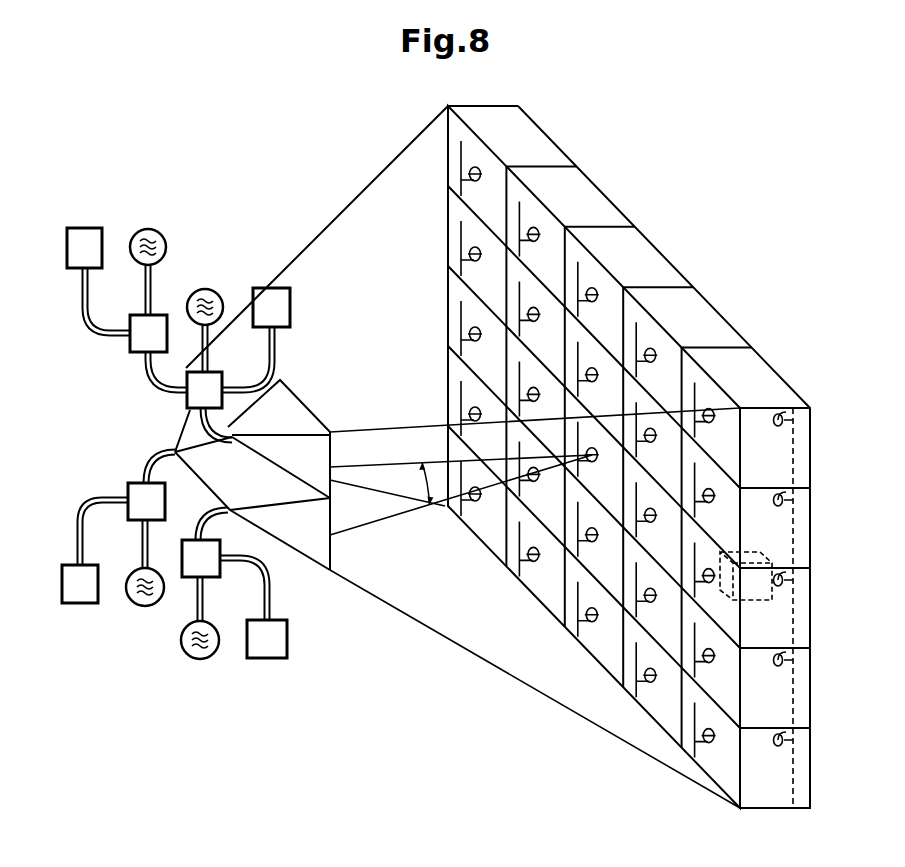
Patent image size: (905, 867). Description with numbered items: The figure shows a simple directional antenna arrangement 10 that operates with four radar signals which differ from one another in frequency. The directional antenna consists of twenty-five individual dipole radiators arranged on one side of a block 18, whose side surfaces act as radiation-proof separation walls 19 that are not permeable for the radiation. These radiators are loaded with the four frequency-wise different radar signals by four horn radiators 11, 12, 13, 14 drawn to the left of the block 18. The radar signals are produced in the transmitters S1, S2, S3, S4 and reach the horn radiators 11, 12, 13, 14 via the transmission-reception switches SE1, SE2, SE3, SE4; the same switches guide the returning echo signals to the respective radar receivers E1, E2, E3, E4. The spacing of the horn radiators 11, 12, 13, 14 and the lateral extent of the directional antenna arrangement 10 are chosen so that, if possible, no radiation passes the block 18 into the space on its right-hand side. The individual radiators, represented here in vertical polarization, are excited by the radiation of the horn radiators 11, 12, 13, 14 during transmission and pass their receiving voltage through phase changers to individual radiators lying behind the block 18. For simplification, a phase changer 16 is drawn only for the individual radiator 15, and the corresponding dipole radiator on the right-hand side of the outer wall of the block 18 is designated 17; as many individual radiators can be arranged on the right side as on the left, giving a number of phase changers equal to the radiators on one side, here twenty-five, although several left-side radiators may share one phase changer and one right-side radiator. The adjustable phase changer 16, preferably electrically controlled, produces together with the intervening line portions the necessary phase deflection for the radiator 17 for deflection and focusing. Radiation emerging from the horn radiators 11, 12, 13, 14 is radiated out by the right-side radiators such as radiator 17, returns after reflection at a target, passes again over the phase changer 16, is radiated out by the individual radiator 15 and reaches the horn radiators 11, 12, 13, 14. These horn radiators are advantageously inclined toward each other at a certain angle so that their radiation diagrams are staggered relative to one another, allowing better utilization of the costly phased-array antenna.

The directional antenna arrangement 10 is at (648, 238).
The horn radiator 11 is at (235, 348).
The horn radiator 12 is at (303, 415).
The horn radiator 13 is at (215, 465).
The horn radiator 14 is at (318, 545).
The individual radiator 15 is at (693, 552).
The phase changer 16 is at (757, 590).
The dipole radiator 17 is at (794, 547).
The block 18 is at (535, 145).
The separation wall 19 is at (508, 190).
The radar receiver E1 is at (98, 280).
The radar receiver E2 is at (256, 339).
The radar receiver E3 is at (95, 551).
The radar receiver E4 is at (253, 608).
The transmitter S1 is at (148, 259).
The transmitter S2 is at (205, 318).
The transmitter S3 is at (145, 578).
The transmitter S4 is at (200, 634).
The transmission-reception switch SE1 is at (133, 342).
The transmission-reception switch SE2 is at (190, 400).
The transmission-reception switch SE3 is at (143, 493).
The transmission-reception switch SE4 is at (207, 565).